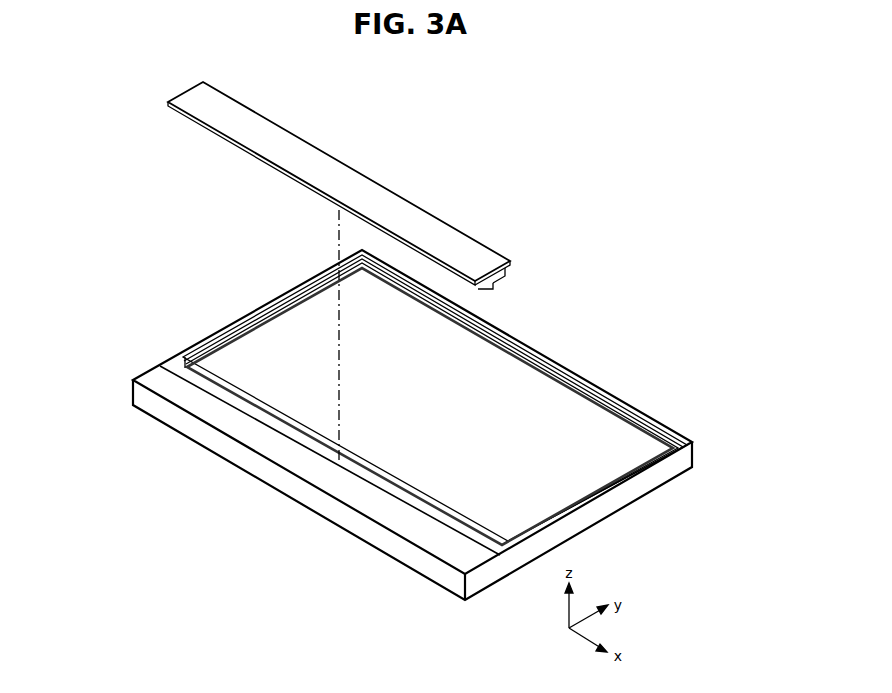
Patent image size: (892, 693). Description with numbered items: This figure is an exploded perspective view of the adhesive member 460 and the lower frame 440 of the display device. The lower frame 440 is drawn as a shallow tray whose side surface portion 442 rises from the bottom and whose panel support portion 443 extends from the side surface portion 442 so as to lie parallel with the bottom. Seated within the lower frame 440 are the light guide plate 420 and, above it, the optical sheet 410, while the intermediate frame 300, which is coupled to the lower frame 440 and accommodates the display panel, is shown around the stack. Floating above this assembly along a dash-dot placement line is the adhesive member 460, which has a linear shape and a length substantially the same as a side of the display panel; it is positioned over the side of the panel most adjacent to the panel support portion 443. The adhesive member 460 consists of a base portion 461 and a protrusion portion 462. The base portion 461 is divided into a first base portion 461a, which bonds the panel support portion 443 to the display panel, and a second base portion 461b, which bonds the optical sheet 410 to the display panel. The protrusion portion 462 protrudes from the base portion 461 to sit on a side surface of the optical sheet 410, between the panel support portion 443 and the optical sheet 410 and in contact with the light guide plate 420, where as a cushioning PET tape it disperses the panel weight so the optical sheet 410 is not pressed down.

The intermediate frame 300 is at (222, 344).
The optical sheet 410 is at (303, 322).
The light guide plate 420 is at (252, 414).
The lower frame 440 is at (412, 462).
The side surface portion 442 is at (490, 574).
The panel support portion 443 is at (457, 549).
The adhesive member 460 is at (415, 195).
The base portion 461 is at (547, 282).
The first base portion 461a is at (486, 282).
The second base portion 461b is at (502, 271).
The protrusion portion 462 is at (494, 257).